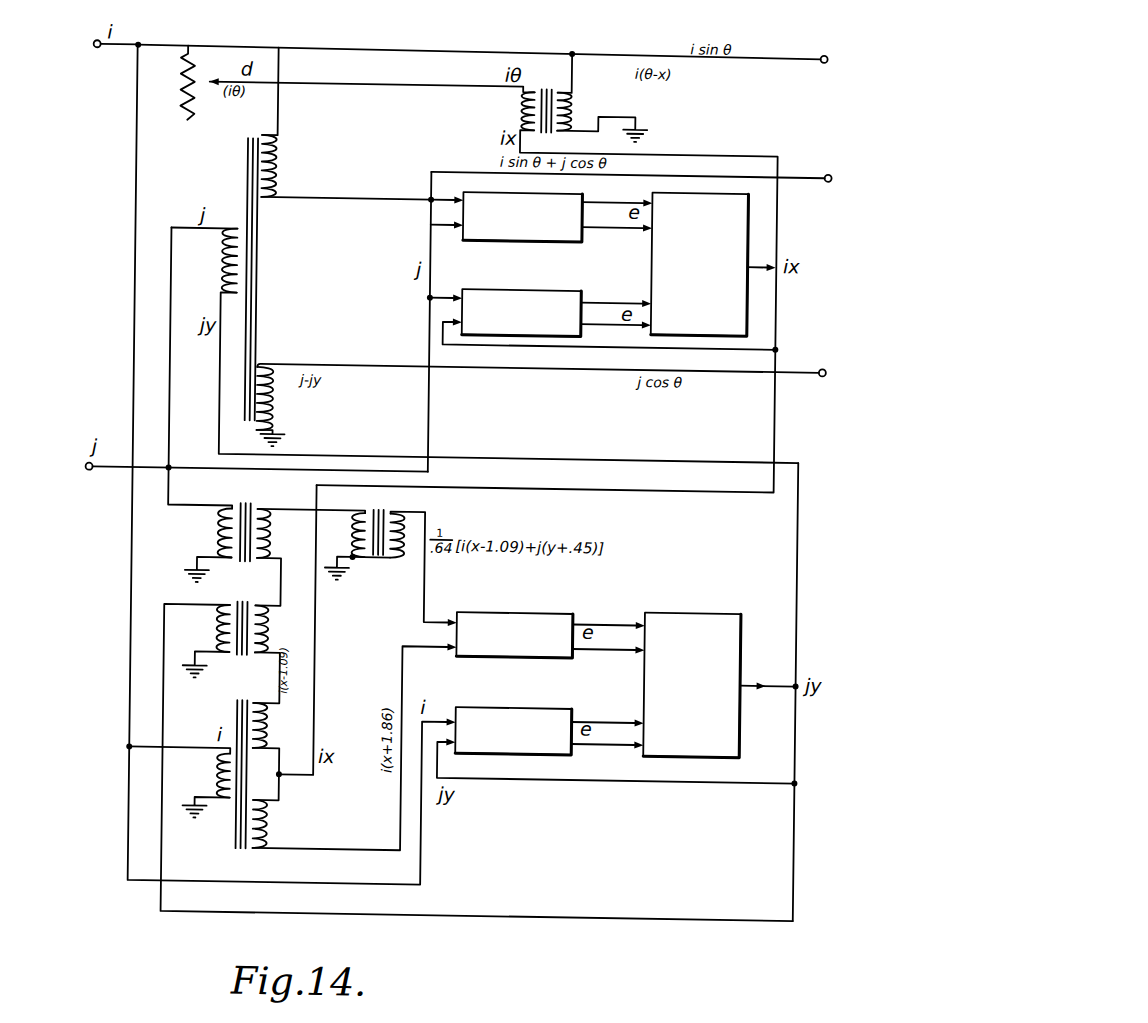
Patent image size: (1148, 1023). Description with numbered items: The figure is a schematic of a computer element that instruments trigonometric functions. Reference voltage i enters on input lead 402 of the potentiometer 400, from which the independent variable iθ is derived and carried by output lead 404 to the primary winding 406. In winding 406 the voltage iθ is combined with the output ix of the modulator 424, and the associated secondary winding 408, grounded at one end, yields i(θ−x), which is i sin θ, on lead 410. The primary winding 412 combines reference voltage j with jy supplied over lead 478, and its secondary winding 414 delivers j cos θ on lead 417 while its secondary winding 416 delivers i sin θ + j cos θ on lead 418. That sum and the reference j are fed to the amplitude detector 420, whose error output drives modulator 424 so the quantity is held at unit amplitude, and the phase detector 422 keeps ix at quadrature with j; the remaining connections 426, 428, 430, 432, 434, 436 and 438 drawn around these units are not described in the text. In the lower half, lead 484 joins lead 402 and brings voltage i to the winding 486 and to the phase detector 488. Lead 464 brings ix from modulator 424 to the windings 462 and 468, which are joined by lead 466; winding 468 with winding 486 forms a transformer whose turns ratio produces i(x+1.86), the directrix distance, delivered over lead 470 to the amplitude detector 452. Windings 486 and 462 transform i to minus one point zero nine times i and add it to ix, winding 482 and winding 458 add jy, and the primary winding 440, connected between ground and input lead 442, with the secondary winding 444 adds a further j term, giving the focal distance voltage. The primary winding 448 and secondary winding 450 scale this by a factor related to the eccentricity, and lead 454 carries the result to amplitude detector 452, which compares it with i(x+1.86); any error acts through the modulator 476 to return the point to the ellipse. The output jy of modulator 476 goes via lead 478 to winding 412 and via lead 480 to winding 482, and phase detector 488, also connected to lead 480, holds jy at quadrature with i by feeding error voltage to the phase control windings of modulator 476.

The potentiometer 400 is at (188, 63).
The input lead 402 is at (141, 41).
The output lead 404 is at (355, 86).
The primary winding 406 is at (516, 99).
The secondary winding 408 is at (568, 103).
The lead 410 is at (620, 52).
The primary winding 412 is at (220, 262).
The secondary winding 414 is at (272, 405).
The secondary winding 416 is at (275, 163).
The lead 417 is at (799, 367).
The lead 418 is at (798, 172).
The amplitude detector 420 is at (498, 240).
The phase detector 422 is at (513, 290).
The modulator 424 is at (652, 258).
The conductor 426 is at (428, 246).
The conductor 428 is at (588, 200).
The conductor 430 is at (590, 226).
The conductor 432 is at (439, 298).
The conductor 434 is at (472, 345).
The conductor 436 is at (588, 322).
The conductor 438 is at (630, 294).
The primary winding 440 is at (218, 536).
The input lead 442 is at (100, 476).
The secondary winding 444 is at (271, 533).
The primary winding 448 is at (354, 546).
The secondary winding 450 is at (406, 540).
The amplitude detector 452 is at (498, 612).
The lead 454 is at (426, 592).
The winding 458 is at (270, 624).
The secondary winding 462 is at (269, 722).
The lead 464 is at (319, 649).
The lead 466 is at (284, 793).
The winding 468 is at (272, 826).
The lead 470 is at (336, 851).
The modulator 476 is at (702, 611).
The lead 478 is at (797, 519).
The lead 480 is at (587, 916).
The winding 482 is at (218, 629).
The lead 484 is at (133, 166).
The winding 486 is at (222, 771).
The phase detector 488 is at (504, 706).